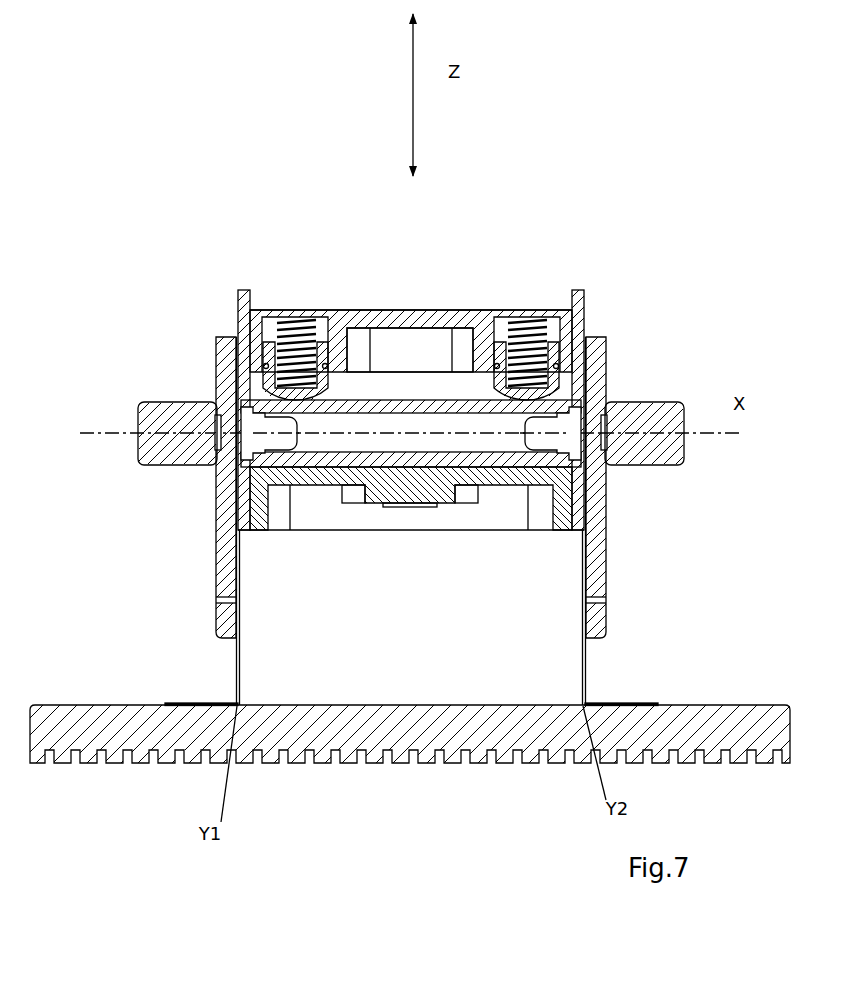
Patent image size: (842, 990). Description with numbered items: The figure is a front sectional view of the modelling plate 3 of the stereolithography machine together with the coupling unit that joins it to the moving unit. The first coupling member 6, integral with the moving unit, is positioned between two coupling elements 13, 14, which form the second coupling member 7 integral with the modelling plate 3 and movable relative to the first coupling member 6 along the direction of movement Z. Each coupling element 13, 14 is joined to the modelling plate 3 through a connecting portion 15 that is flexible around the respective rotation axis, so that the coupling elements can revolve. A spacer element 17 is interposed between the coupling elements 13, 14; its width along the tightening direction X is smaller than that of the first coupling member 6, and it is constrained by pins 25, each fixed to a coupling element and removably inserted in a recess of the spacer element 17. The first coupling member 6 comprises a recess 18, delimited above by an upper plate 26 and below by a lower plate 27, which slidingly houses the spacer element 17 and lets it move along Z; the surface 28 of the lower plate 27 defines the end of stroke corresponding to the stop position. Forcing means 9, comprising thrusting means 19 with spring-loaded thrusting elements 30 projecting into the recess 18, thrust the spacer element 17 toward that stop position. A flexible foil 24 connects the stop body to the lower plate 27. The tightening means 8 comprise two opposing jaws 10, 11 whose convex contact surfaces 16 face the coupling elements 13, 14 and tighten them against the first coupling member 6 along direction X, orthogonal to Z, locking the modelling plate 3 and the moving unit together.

The modelling plate 3 is at (91, 738).
The first coupling member 6 is at (586, 292).
The second coupling member 7 is at (362, 398).
The tightening means 8 is at (689, 398).
The forcing means 9 is at (305, 305).
The jaw 10 is at (157, 428).
The jaw 11 is at (643, 413).
The coupling element 13 is at (225, 358).
The coupling element 14 is at (593, 347).
The connecting portion 15 is at (236, 672).
The contact surface 16 is at (215, 457).
The spacer element 17 is at (330, 466).
The recess 18 is at (425, 370).
The thrusting means 19 is at (300, 347).
The flexible foil 24 is at (405, 506).
The pin 25 is at (252, 432).
The upper plate 26 is at (396, 400).
The lower plate 27 is at (437, 492).
The surface 28 is at (507, 468).
The thrusting element 30 is at (278, 392).